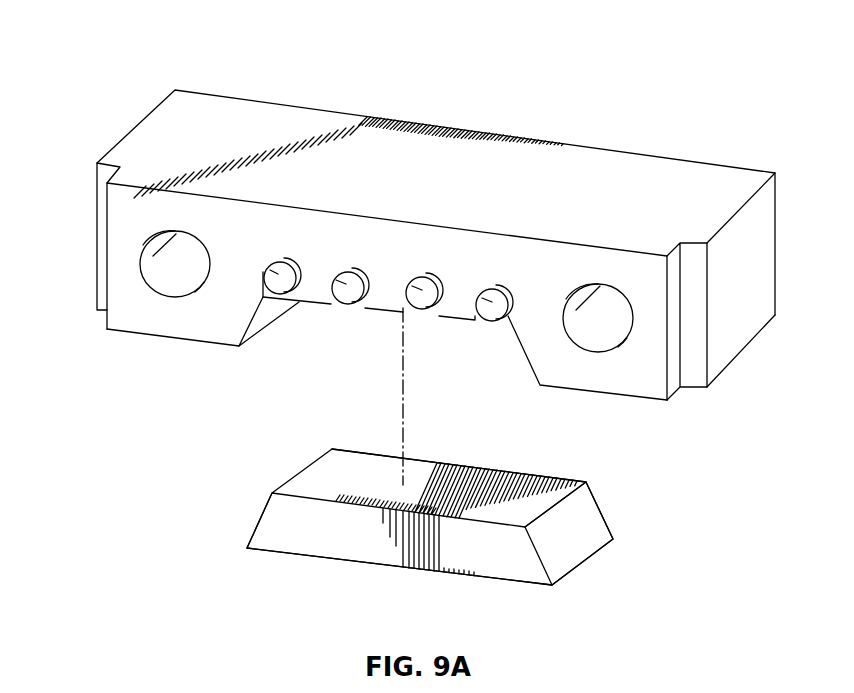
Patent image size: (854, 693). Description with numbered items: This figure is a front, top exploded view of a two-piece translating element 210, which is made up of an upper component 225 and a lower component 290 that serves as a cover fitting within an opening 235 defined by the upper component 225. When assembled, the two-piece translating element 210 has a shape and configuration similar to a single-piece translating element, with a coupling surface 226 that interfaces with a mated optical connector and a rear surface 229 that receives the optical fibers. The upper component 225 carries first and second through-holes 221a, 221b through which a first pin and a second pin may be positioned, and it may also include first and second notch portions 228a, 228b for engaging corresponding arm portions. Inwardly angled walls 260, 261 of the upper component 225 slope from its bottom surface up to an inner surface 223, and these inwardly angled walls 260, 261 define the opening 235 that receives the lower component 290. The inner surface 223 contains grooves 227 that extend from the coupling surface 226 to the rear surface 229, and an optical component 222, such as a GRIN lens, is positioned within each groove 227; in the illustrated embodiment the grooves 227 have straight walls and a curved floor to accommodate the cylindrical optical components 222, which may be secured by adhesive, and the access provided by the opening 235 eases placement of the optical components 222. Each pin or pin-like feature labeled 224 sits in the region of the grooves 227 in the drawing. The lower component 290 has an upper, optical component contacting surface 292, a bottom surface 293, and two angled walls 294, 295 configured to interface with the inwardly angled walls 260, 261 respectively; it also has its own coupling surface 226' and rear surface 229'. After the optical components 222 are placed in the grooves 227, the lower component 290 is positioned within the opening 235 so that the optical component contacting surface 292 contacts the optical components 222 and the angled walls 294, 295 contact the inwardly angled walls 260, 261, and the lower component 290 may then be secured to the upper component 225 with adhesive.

The two-piece translating element 210 is at (112, 88).
The rear surface 229 is at (348, 126).
The upper component 225 is at (720, 173).
The second notch portion 228b is at (96, 178).
The first notch portion 228a is at (698, 372).
The second through-hole 221b is at (146, 244).
The first through-hole 221a is at (610, 272).
The coupling surface 226 is at (173, 358).
The inwardly angled wall 260 is at (257, 332).
The inwardly angled wall 261 is at (520, 350).
The pin 224 is at (265, 268).
The groove 227 is at (303, 283).
The optical component 222 is at (299, 302).
The inner surface 223 is at (387, 313).
The opening 235 is at (430, 387).
The lower component 290 is at (600, 498).
The optical component contacting surface 292 is at (328, 473).
The rear surface 229' is at (456, 468).
The angled wall 294 is at (256, 520).
The coupling surface 226' is at (331, 547).
The bottom surface 293 is at (488, 592).
The angled wall 295 is at (600, 523).